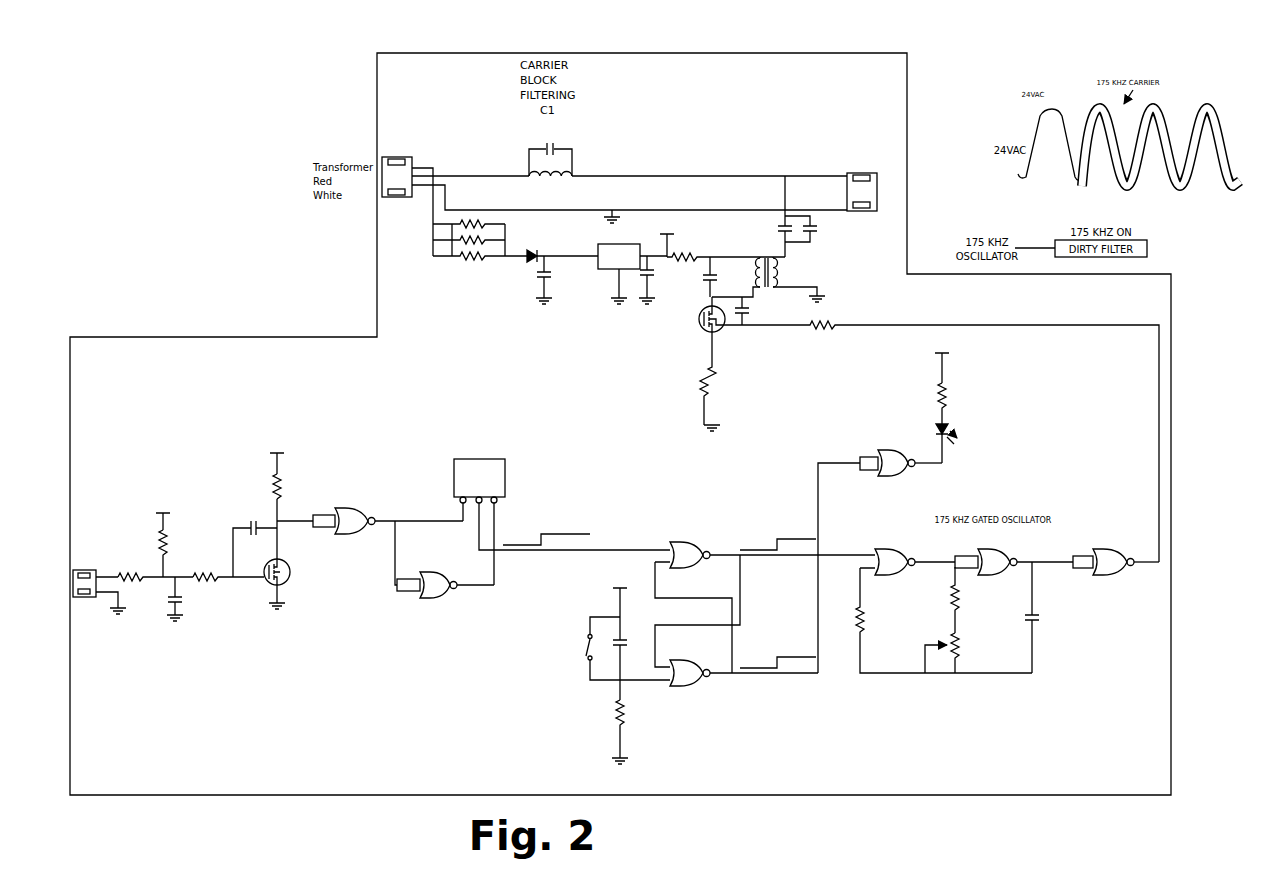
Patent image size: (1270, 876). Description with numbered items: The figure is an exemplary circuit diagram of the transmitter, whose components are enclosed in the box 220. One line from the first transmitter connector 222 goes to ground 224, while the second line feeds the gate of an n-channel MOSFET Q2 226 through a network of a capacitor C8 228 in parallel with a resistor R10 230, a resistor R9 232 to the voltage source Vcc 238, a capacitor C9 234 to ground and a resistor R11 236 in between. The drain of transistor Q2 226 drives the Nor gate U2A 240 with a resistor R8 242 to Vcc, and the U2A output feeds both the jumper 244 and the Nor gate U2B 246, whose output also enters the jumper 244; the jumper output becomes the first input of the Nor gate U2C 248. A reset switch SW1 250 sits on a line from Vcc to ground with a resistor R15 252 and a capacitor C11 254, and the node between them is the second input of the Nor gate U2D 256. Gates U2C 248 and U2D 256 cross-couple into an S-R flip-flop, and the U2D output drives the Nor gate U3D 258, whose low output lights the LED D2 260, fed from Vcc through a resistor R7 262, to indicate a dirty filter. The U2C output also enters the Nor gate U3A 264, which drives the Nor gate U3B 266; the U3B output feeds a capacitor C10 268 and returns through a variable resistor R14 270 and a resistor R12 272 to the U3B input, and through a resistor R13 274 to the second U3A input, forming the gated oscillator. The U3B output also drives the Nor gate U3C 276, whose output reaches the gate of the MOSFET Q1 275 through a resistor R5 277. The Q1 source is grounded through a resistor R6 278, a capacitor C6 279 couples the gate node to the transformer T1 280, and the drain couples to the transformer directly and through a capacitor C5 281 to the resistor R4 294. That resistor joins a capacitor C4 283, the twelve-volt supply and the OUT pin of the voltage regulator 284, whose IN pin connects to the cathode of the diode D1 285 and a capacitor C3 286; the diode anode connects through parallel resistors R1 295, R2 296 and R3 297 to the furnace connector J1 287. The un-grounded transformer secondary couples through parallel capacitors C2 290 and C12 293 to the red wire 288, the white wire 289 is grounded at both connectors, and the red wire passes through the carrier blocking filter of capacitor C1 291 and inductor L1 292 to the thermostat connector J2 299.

The box 220 is at (895, 53).
The first transmitter connector 222 is at (86, 598).
The ground 224 is at (606, 219).
The MOSFET Q2 226 is at (287, 561).
The capacitor C8 228 is at (250, 525).
The resistor R10 230 is at (155, 582).
The resistor R9 232 is at (160, 541).
The capacitor C9 234 is at (170, 604).
The resistor R11 236 is at (228, 582).
The voltage source Vcc 238 is at (685, 231).
The Nor gate U2A 240 is at (313, 520).
The resistor R8 242 is at (281, 484).
The jumper 244 is at (505, 473).
The Nor gate U2B 246 is at (398, 592).
The Nor gate U2C 248 is at (670, 546).
The reset switch SW1 250 is at (585, 648).
The resistor R15 252 is at (638, 729).
The capacitor C11 254 is at (616, 647).
The Nor gate U2D 256 is at (667, 669).
The Nor gate U3D 258 is at (908, 438).
The LED D2 260 is at (950, 429).
The resistor R7 262 is at (945, 406).
The Nor gate U3A 264 is at (911, 594).
The Nor gate U3B 266 is at (960, 556).
The capacitor C10 268 is at (1040, 623).
The variable resistor R14 270 is at (958, 649).
The resistor R12 272 is at (960, 607).
The resistor R13 274 is at (866, 629).
The MOSFET Q1 275 is at (699, 333).
The Nor gate U3C 276 is at (1078, 556).
The resistor R5 277 is at (942, 433).
The resistor R6 278 is at (708, 381).
The capacitor C6 279 is at (746, 314).
The transformer T1 280 is at (760, 257).
The capacitor C5 281 is at (716, 279).
The capacitor C4 283 is at (647, 283).
The voltage regulator 284 is at (618, 244).
The diode D1 285 is at (535, 255).
The capacitor C3 286 is at (541, 280).
The connector J1 287 is at (412, 158).
The red wire 288 is at (812, 176).
The white wire 289 is at (862, 211).
The capacitor C2 290 is at (777, 228).
The capacitor C1 291 is at (550, 143).
The inductor L1 292 is at (572, 177).
The capacitor C12 293 is at (818, 229).
The resistor R4 294 is at (685, 258).
The resistor R1 295 is at (436, 225).
The resistor R2 296 is at (436, 240).
The resistor R3 297 is at (433, 256).
The connector J2 299 is at (877, 173).